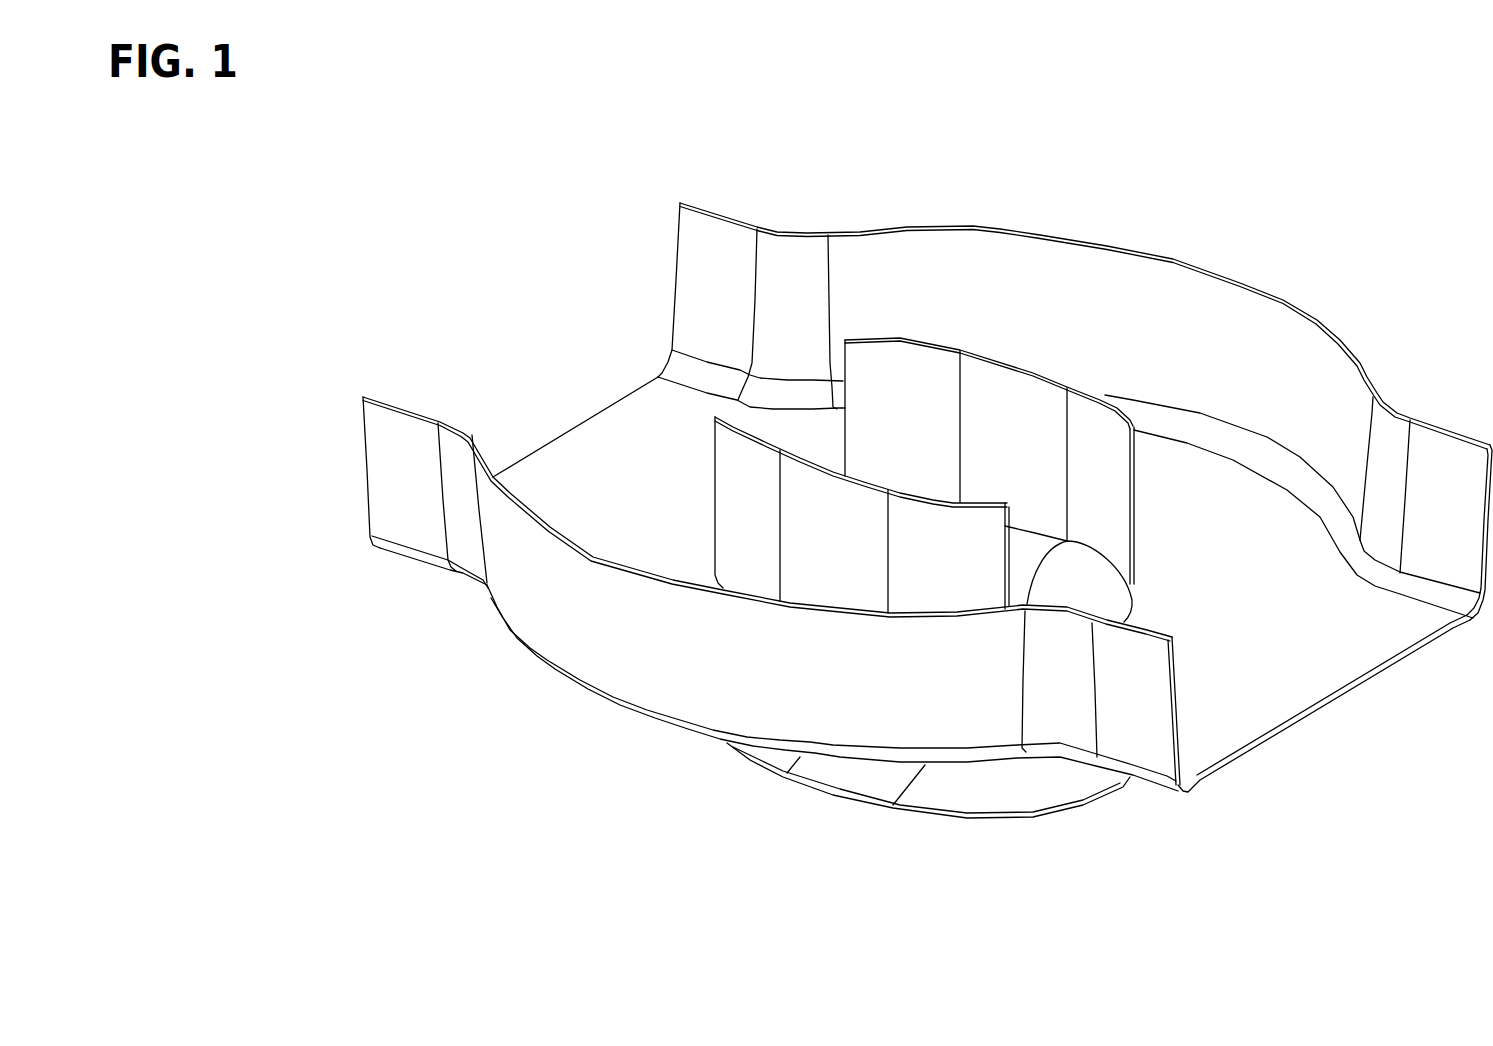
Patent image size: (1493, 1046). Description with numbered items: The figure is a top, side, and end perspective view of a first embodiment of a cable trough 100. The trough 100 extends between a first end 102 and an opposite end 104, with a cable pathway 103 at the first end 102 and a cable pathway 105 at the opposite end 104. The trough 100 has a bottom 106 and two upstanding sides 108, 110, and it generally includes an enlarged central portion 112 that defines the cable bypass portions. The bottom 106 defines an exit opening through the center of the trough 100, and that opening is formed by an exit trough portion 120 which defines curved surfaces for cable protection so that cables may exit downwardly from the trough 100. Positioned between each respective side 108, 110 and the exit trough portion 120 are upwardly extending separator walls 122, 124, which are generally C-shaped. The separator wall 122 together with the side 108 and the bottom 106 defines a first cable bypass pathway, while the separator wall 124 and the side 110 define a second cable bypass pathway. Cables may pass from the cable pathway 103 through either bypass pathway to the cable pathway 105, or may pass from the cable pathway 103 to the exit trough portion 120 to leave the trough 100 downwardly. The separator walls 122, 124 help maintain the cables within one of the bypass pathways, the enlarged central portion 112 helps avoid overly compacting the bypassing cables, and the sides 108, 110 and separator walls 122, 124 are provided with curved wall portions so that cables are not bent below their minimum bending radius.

The trough 100 is at (620, 241).
The first end 102 is at (567, 432).
The cable pathway 103 is at (650, 497).
The opposite end 104 is at (1323, 712).
The cable pathway 105 is at (1318, 677).
The bottom 106 is at (1313, 570).
The side 108 is at (1257, 364).
The side 110 is at (824, 695).
The enlarged central portion 112 is at (1192, 262).
The exit trough portion 120 is at (1135, 602).
The separator wall 122 is at (1137, 502).
The separator wall 124 is at (868, 481).